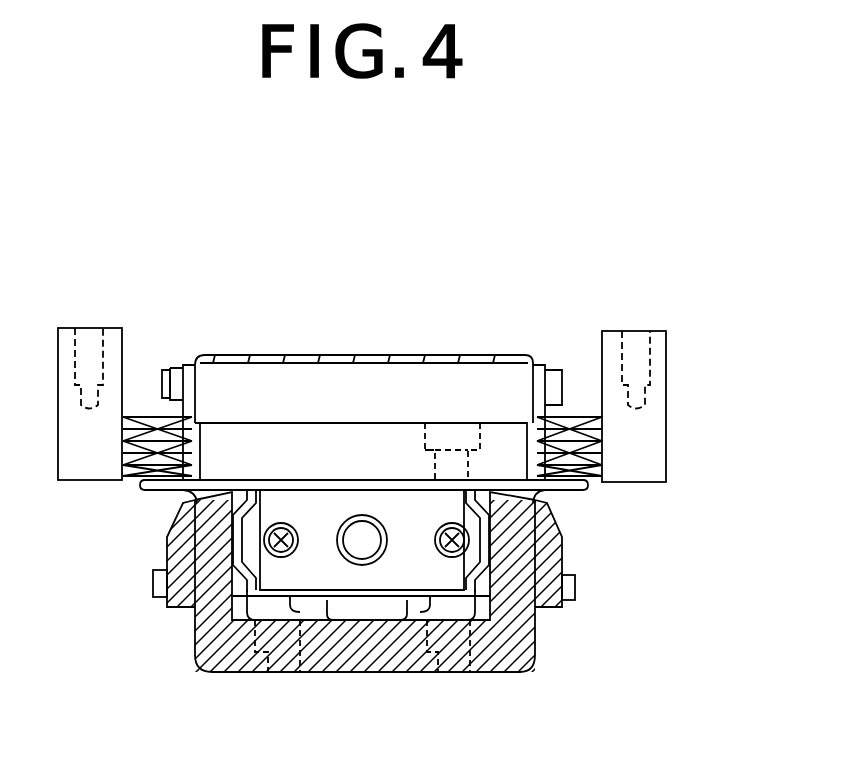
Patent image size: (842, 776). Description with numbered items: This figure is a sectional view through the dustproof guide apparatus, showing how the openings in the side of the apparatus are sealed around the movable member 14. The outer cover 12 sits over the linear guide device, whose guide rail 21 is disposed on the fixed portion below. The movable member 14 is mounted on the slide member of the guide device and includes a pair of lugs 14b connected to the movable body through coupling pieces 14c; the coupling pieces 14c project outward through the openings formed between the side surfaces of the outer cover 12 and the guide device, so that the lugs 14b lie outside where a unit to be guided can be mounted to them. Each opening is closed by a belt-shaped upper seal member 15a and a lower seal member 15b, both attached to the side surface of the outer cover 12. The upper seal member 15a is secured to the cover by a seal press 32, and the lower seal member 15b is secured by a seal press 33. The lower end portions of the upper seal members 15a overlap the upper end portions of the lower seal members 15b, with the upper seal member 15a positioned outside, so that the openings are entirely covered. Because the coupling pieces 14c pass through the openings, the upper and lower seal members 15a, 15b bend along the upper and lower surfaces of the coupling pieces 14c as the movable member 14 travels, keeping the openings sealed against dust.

The outer cover 12 is at (395, 358).
The movable member 14 is at (297, 445).
The lug 14b is at (648, 400).
The coupling piece 14c is at (120, 465).
The upper seal member 15a is at (572, 417).
The lower seal member 15b is at (565, 492).
The guide rail 21 is at (500, 643).
The seal press 32 is at (548, 365).
The seal press 33 is at (565, 545).